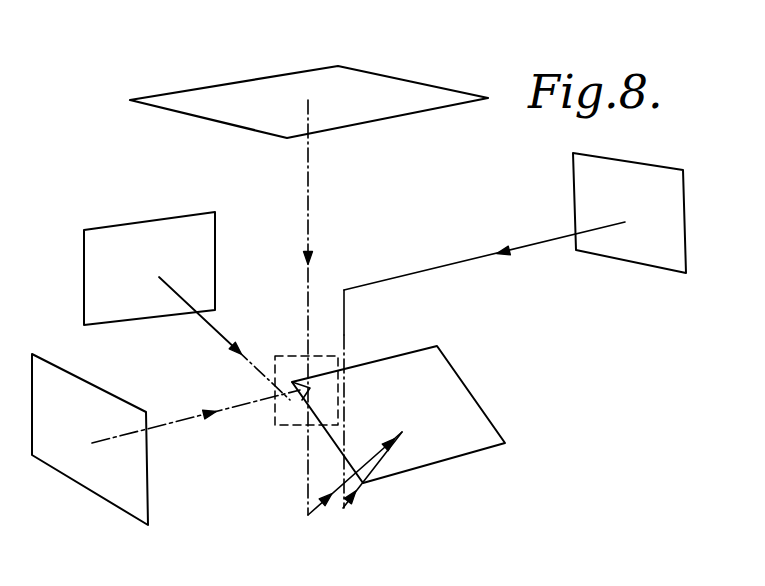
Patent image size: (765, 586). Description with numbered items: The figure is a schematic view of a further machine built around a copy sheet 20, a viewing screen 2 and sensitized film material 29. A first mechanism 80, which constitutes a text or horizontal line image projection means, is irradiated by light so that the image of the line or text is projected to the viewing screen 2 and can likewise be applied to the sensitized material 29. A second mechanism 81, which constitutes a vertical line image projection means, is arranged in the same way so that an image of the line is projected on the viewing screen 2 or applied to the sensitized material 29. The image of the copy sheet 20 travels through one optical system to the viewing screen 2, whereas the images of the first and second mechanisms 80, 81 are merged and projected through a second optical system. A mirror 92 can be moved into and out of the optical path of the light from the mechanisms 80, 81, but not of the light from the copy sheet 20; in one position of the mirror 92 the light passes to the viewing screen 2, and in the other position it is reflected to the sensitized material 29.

The first mechanism 80 is at (385, 86).
The copy sheet 20 is at (583, 185).
The sensitized film material 29 is at (162, 224).
The second mechanism 81 is at (87, 472).
The viewing screen 2 is at (472, 417).
The mirror 92 is at (288, 410).